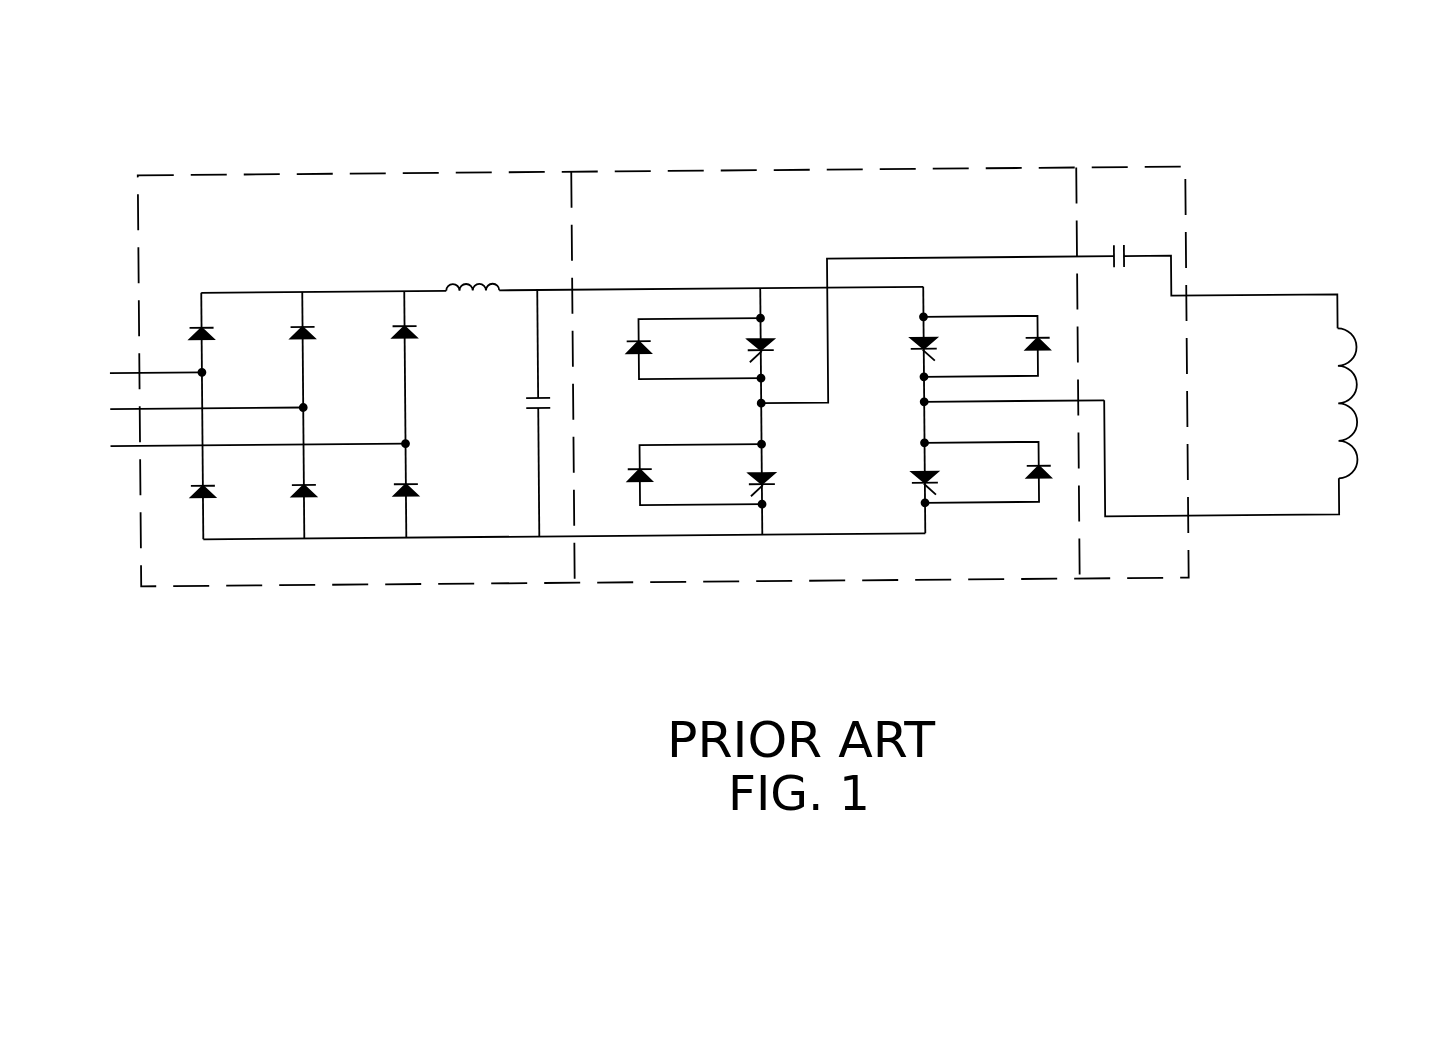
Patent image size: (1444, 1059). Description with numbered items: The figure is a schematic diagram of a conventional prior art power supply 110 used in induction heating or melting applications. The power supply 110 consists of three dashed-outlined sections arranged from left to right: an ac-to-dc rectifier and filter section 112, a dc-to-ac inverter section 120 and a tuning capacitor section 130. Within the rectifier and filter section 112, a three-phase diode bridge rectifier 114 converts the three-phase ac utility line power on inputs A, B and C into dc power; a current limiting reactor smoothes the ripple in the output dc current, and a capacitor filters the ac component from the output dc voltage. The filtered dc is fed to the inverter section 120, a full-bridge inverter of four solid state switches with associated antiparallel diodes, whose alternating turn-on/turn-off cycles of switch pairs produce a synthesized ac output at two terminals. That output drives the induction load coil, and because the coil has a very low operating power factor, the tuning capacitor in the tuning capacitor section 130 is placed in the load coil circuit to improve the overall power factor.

The power supply 110 is at (632, 78).
The ac-to-dc rectifier and filter section 112 is at (504, 324).
The three-phase diode bridge rectifier 114 is at (298, 246).
The dc-to-ac inverter section 120 is at (939, 169).
The tuning capacitor section 130 is at (1182, 171).